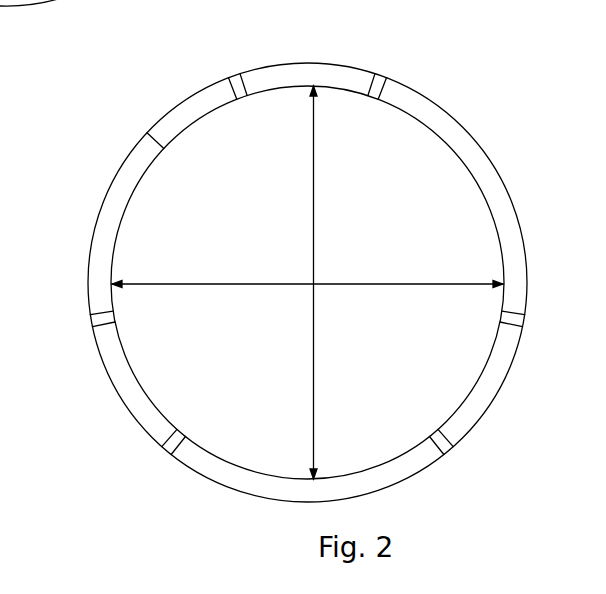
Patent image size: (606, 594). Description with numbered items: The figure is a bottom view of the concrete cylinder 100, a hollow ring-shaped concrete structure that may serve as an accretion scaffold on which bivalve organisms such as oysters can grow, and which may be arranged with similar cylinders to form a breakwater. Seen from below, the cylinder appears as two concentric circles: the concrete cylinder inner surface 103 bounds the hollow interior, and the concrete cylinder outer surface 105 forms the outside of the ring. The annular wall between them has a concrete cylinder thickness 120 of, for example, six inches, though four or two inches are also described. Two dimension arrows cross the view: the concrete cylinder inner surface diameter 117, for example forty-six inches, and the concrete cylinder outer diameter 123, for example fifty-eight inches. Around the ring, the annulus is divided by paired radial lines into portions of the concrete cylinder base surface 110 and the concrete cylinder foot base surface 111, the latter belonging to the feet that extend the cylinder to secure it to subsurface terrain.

The concrete cylinder 100 is at (290, 259).
The concrete cylinder inner surface 103 is at (330, 88).
The concrete cylinder outer surface 105 is at (291, 63).
The concrete cylinder base surface 110 is at (290, 259).
The concrete cylinder foot base surface 111 is at (342, 78).
The concrete cylinder inner surface diameter 117 is at (413, 285).
The concrete cylinder thickness 120 is at (163, 145).
The concrete cylinder outer diameter 123 is at (313, 255).